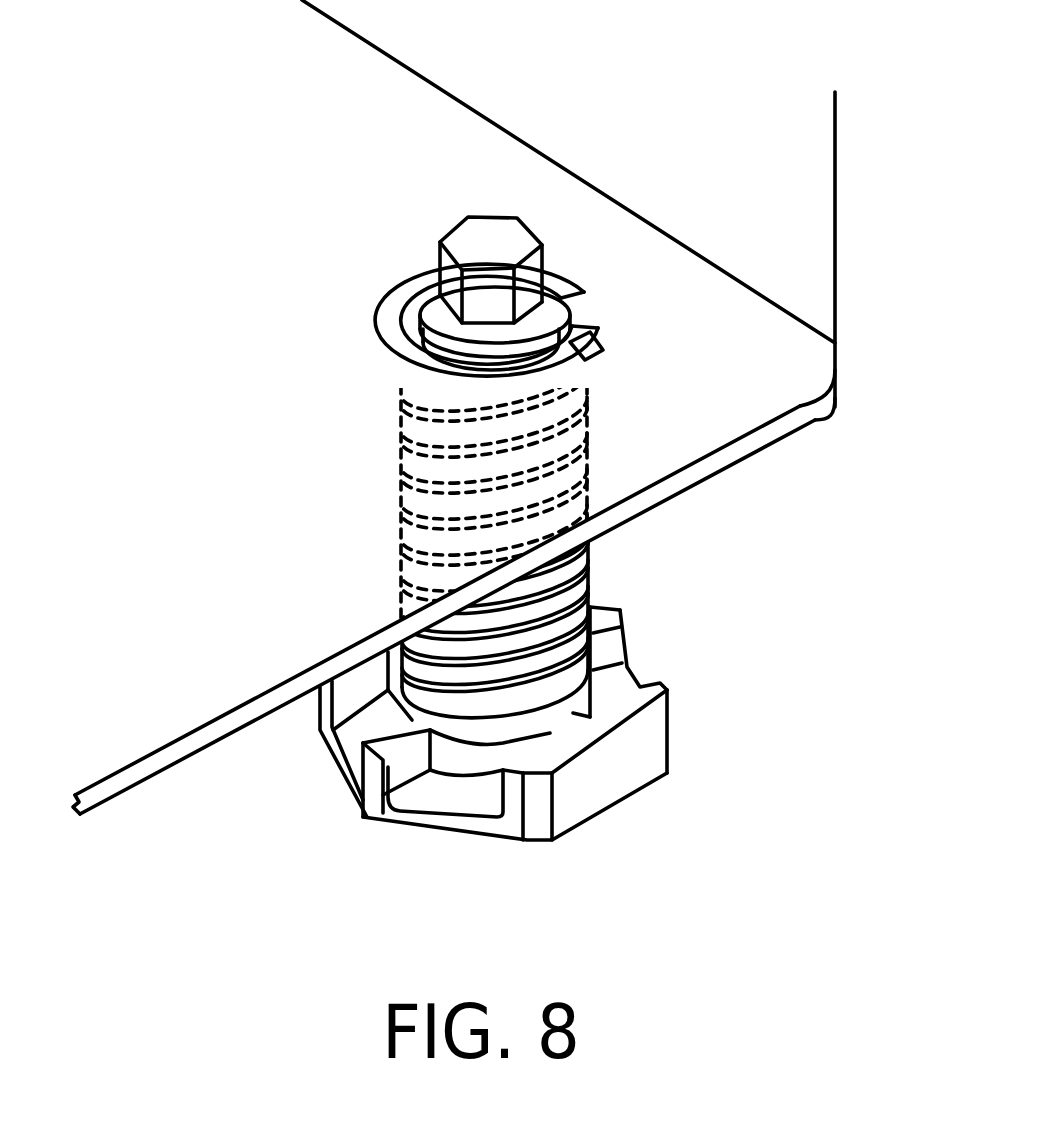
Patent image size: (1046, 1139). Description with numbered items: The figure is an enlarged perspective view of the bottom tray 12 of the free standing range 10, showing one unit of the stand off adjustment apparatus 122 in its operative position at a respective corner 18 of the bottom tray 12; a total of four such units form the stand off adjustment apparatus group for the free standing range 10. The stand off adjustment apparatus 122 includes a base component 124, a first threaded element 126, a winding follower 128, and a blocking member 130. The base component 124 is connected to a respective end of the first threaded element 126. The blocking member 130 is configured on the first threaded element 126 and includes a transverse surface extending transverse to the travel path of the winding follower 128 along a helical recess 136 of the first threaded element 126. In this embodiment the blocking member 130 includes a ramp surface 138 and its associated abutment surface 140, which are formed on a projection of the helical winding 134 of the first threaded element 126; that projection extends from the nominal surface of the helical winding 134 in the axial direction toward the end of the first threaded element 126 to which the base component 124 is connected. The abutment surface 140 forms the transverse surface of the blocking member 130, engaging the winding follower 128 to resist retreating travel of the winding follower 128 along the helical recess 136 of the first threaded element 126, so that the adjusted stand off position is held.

The free standing range 10 is at (789, 152).
The bottom tray 12 is at (200, 707).
The corner 18 is at (818, 362).
The stand off adjustment apparatus 122 is at (340, 302).
The base component 124 is at (340, 800).
The first threaded element 126 is at (403, 308).
The winding follower 128 is at (604, 299).
The blocking member 130 is at (559, 312).
The helical winding 134 is at (410, 393).
The helical recess 136 is at (395, 352).
The ramp surface 138 is at (570, 378).
The abutment surface 140 is at (494, 500).